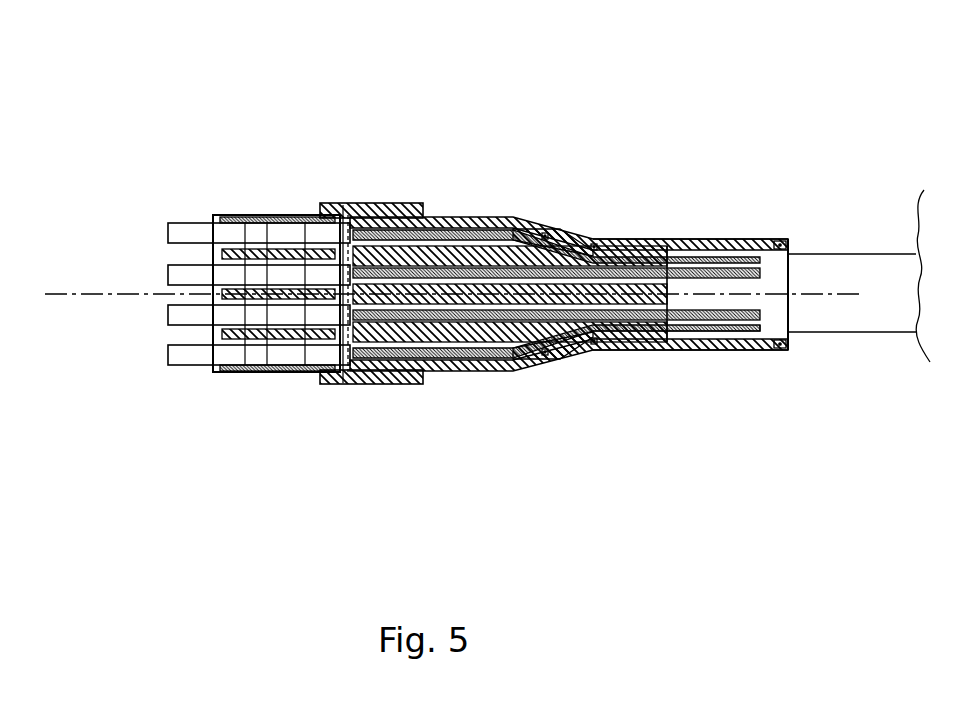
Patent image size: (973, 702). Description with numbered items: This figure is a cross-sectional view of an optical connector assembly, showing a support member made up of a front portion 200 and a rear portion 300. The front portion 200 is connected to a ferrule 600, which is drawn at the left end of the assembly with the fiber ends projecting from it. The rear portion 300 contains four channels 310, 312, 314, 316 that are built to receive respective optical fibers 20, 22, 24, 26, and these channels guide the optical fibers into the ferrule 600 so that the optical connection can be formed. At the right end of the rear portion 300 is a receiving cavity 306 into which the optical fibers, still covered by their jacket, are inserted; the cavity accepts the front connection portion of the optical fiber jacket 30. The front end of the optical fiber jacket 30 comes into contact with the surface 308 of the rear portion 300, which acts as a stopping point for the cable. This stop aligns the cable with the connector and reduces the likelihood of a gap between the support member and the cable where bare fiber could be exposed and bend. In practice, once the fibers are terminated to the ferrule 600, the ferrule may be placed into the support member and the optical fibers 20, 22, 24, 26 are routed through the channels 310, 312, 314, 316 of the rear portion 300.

The ferrule 600 is at (270, 373).
The front portion 200 is at (343, 205).
The rear portion 300 is at (483, 215).
The channel 310 is at (448, 217).
The channel 312 is at (512, 250).
The surface 308 is at (687, 284).
The channel 314 is at (530, 370).
The channel 316 is at (462, 373).
The optical fiber 22 is at (730, 267).
The optical fiber 20 is at (755, 240).
The optical fiber 24 is at (752, 350).
The optical fiber 26 is at (706, 332).
The optical fiber jacket 30 is at (869, 254).
The receiving cavity 306 is at (800, 336).